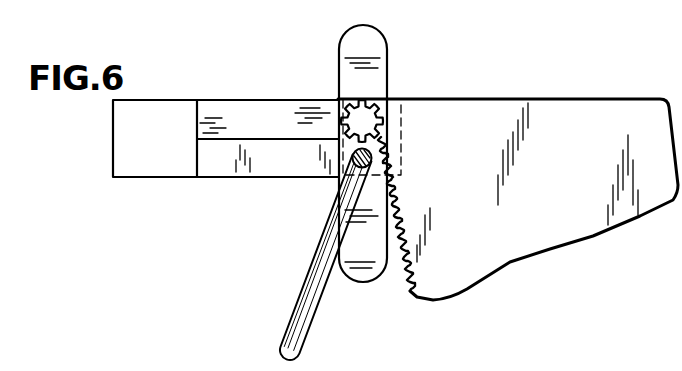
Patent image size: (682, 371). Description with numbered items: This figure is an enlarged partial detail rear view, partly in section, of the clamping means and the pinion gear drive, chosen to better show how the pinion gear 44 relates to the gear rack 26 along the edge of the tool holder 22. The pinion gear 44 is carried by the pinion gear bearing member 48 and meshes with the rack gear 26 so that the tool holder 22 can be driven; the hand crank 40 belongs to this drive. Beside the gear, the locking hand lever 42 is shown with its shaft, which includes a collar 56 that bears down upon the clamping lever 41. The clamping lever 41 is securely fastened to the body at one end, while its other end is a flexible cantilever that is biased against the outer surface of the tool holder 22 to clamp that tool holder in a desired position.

The tool holder 22 is at (553, 244).
The gear rack 26 is at (404, 283).
The hand crank 40 is at (380, 46).
The clamping lever 41 is at (243, 170).
The locking hand lever 42 is at (306, 275).
The pinion gear 44 is at (380, 118).
The pinion gear bearing member 48 is at (273, 100).
The collar 56 is at (375, 152).